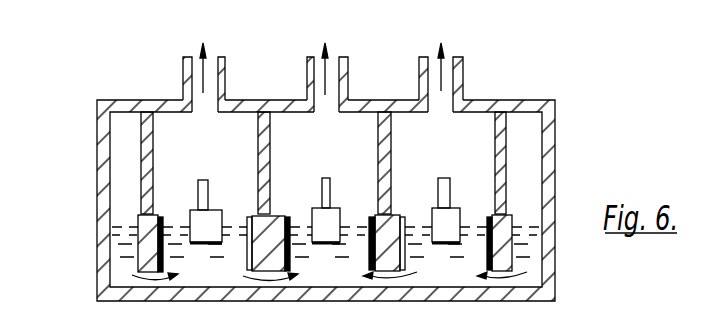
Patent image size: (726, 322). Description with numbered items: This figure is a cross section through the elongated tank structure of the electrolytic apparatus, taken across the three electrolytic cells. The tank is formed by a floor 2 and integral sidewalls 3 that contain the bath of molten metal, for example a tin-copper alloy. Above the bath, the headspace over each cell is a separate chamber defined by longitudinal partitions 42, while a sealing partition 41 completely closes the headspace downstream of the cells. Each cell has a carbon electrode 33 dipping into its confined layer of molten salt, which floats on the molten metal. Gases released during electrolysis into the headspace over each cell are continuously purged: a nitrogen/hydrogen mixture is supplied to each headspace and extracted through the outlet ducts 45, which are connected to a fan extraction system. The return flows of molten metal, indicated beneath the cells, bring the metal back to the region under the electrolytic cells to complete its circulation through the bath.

The floor 2 is at (328, 300).
The sidewalls 3 is at (104, 251).
The carbon electrode 33 is at (211, 228).
The sealing partition 41 is at (286, 118).
The longitudinal partitions 42 is at (154, 166).
The outlet ducts 45 is at (222, 81).